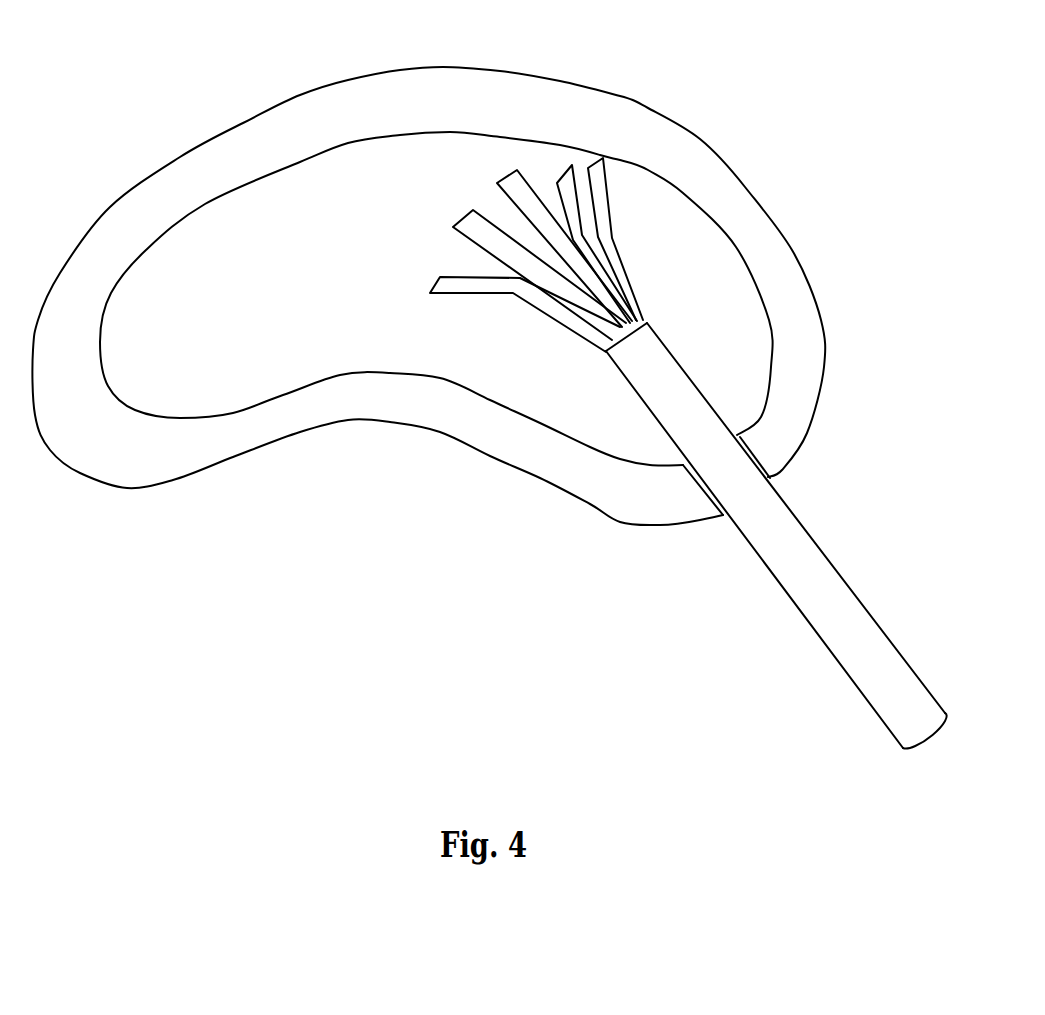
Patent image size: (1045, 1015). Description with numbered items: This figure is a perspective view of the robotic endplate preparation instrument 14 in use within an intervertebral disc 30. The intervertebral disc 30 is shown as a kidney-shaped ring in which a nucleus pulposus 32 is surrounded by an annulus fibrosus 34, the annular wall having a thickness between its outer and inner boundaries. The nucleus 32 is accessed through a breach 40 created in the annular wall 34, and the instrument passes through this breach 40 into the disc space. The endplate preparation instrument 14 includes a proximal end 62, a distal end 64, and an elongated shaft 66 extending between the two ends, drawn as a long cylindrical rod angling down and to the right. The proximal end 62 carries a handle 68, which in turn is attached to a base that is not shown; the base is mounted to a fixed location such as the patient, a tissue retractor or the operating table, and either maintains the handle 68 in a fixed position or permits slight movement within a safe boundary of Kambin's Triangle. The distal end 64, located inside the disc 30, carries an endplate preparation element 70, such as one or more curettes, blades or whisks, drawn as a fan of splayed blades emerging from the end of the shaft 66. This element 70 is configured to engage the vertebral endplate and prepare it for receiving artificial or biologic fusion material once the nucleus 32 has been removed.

The endplate preparation instrument 14 is at (688, 446).
The intervertebral disc 30 is at (444, 289).
The nucleus pulposus 32 is at (178, 248).
The annulus fibrosus 34 is at (243, 133).
The breach 40 is at (772, 479).
The proximal end 62 is at (885, 784).
The distal end 64 is at (614, 184).
The elongated shaft 66 is at (737, 528).
The handle 68 is at (907, 623).
The endplate preparation element 70 is at (543, 165).